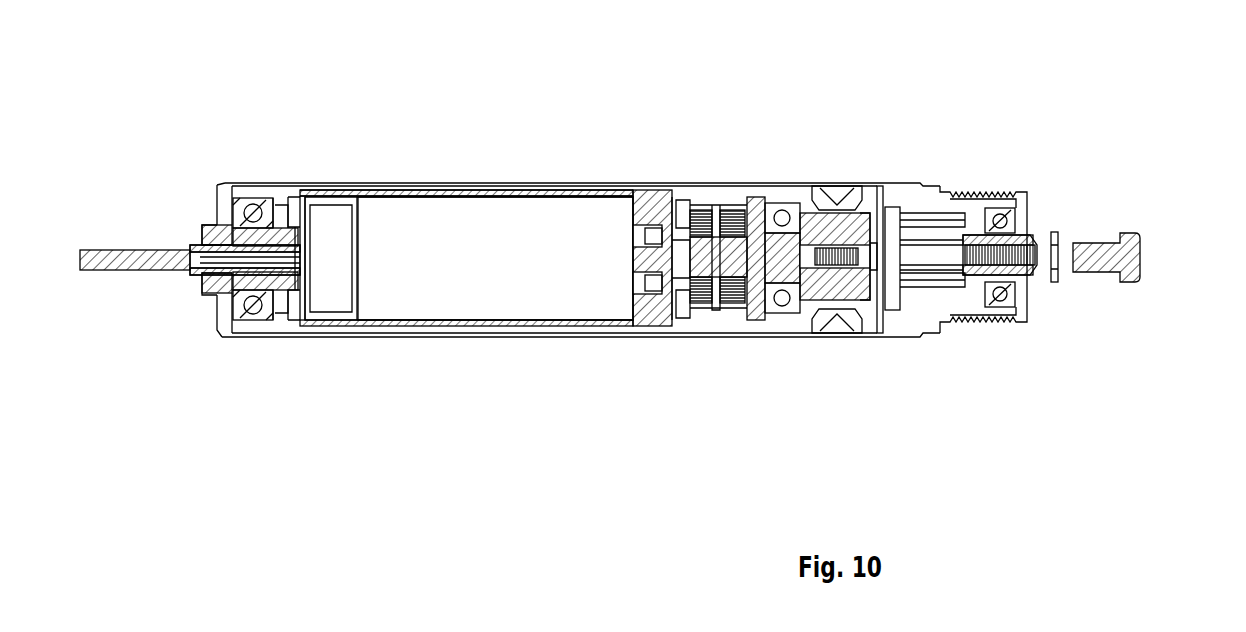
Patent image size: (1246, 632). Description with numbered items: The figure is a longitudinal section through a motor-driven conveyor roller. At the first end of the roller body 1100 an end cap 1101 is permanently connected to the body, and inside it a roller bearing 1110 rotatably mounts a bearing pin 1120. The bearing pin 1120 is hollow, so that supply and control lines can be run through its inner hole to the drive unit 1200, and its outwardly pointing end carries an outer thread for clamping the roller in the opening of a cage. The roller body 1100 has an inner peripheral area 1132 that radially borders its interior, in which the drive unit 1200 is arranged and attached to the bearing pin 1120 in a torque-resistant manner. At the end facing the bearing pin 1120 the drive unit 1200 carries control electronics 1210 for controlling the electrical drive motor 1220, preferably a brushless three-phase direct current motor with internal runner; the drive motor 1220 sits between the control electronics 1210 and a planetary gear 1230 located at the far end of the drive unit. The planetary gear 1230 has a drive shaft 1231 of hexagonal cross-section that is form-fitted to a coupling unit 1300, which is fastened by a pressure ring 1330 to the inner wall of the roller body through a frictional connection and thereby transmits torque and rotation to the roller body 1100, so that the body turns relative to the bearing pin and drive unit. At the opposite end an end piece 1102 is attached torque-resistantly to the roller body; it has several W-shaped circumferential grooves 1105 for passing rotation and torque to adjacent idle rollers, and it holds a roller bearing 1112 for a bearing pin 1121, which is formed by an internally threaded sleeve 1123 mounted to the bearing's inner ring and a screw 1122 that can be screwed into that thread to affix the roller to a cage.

The roller body 1100 is at (373, 187).
The end cap 1101 is at (225, 187).
The end piece 1102 is at (943, 188).
The W-shaped circumferential grooves 1105 is at (1023, 334).
The roller bearing 1110 is at (248, 218).
The roller bearing 1112 is at (1001, 209).
The bearing pin 1120 is at (187, 243).
The bearing pin 1121 is at (1097, 149).
The screw 1122 is at (1113, 243).
The sleeve 1123 is at (1037, 285).
The inner peripheral area 1132 is at (558, 202).
The drive unit 1200 is at (468, 392).
The control electronics 1210 is at (332, 308).
The drive motor 1220 is at (421, 293).
The planetary gear 1230 is at (727, 298).
The drive shaft 1231 is at (797, 260).
The coupling unit 1300 is at (823, 364).
The pressure ring 1330 is at (835, 194).